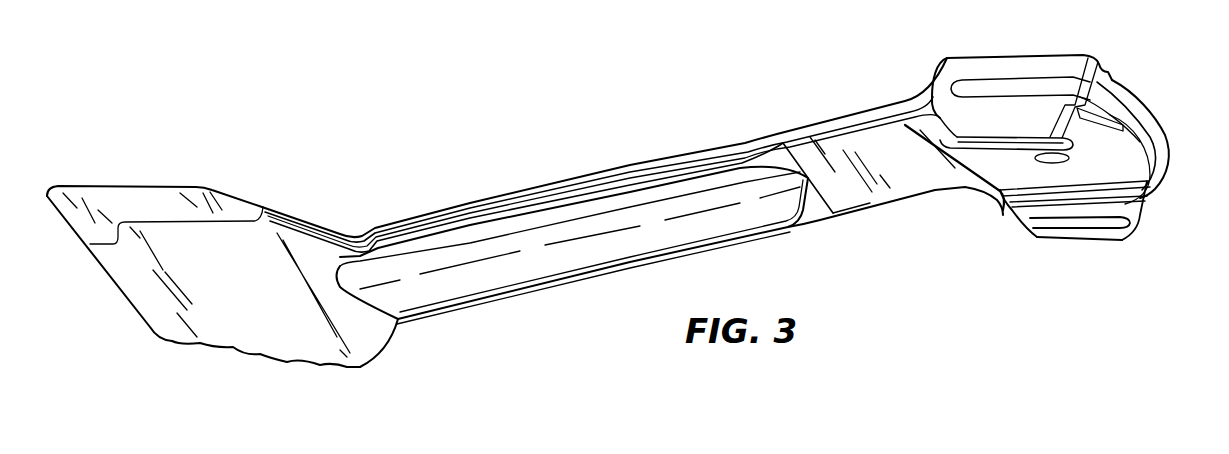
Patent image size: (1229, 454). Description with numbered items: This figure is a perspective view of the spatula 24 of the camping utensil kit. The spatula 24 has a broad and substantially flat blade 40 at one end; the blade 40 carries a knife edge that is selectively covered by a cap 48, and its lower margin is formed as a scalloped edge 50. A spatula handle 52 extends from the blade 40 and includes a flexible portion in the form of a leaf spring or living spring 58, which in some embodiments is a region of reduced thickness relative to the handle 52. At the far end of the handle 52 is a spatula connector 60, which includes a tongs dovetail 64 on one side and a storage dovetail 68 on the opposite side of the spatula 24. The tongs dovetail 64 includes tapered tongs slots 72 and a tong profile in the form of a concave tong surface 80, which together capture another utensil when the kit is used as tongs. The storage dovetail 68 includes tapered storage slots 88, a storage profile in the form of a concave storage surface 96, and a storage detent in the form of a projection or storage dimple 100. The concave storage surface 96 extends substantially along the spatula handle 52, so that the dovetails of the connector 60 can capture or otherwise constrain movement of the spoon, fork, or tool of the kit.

The spatula 24 is at (466, 158).
The blade 40 is at (253, 317).
The cap 48 is at (136, 200).
The scalloped edge 50 is at (280, 358).
The spatula handle 52 is at (620, 168).
The living spring 58 is at (900, 182).
The spatula connector 60 is at (927, 47).
The tongs dovetail 64 is at (1013, 70).
The storage dovetail 68 is at (1062, 238).
The tongs slots 72 is at (1117, 82).
The concave tong surface 80 is at (1147, 120).
The storage slots 88 is at (1133, 210).
The concave storage surface 96 is at (483, 273).
The storage dimple 100 is at (1048, 163).